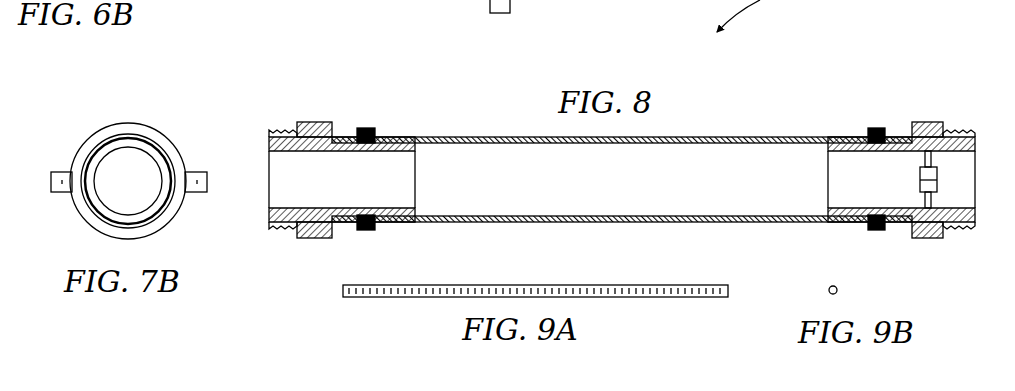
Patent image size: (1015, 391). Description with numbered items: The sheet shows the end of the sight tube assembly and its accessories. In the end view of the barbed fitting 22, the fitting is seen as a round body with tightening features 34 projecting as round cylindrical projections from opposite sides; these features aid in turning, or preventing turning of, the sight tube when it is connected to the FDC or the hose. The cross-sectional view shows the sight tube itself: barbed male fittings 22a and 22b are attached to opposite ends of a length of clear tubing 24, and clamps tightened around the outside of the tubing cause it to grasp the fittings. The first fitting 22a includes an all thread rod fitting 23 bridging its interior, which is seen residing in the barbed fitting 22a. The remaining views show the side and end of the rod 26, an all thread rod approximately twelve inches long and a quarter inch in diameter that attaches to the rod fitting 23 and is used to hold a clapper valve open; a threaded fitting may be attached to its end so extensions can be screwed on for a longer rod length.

In FIG. 7B, the barbed fitting 22 is at (175, 115).
In FIG. 8, the first fitting 22a is at (928, 122).
In FIG. 8, the second fitting 22b is at (313, 122).
In FIG. 8, the all thread rod fitting 23 is at (948, 130).
In FIG. 8, the tubing 24 is at (732, 137).
In FIG. 9A, the rod 26 is at (568, 285).
In FIG. 9B, the rod 26 is at (838, 286).
In FIG. 7B, the tightening features 34 is at (62, 180).